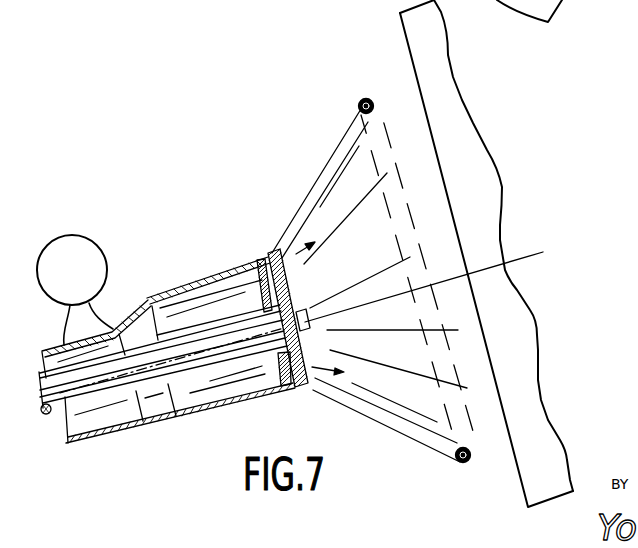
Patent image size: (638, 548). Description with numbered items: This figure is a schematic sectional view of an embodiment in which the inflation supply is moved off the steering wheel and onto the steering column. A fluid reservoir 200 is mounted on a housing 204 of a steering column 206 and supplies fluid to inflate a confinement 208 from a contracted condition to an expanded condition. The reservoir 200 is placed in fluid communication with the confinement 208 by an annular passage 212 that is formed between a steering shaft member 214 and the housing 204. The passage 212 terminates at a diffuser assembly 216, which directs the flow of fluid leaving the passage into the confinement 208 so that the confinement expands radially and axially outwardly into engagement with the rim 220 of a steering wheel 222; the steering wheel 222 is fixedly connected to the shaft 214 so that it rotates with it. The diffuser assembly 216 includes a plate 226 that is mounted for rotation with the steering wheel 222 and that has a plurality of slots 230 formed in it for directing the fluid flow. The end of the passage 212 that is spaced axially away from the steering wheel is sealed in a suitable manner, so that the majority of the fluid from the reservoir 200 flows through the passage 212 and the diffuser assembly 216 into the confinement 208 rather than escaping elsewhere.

The fluid reservoir 200 is at (100, 216).
The housing 204 is at (165, 297).
The steering column 206 is at (208, 280).
The confinement 208 is at (396, 61).
The annular passage 212 is at (153, 399).
The steering shaft member 214 is at (44, 415).
The diffuser assembly 216 is at (304, 278).
The rim 220 is at (363, 100).
The steering wheel 222 is at (313, 190).
The plate 226 is at (305, 342).
The slots 230 is at (296, 390).